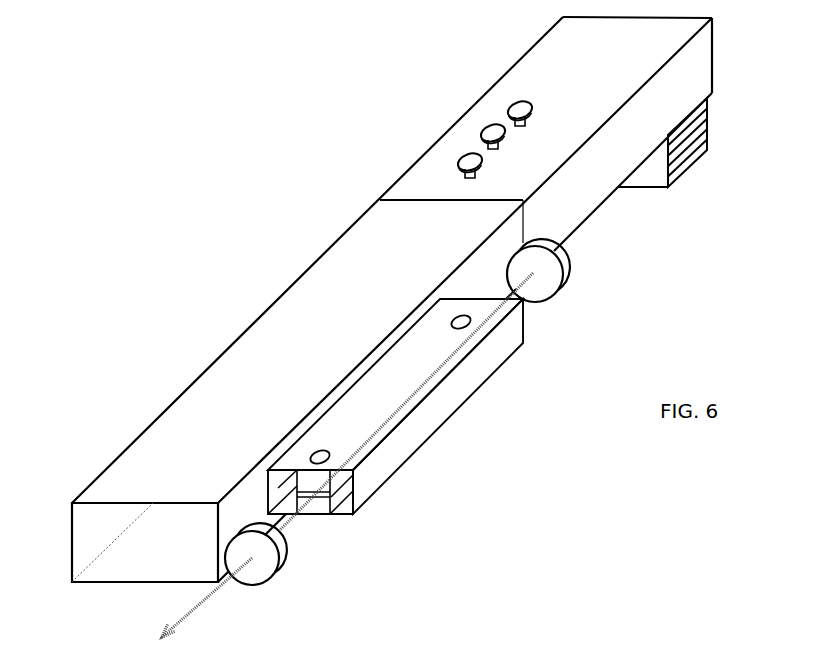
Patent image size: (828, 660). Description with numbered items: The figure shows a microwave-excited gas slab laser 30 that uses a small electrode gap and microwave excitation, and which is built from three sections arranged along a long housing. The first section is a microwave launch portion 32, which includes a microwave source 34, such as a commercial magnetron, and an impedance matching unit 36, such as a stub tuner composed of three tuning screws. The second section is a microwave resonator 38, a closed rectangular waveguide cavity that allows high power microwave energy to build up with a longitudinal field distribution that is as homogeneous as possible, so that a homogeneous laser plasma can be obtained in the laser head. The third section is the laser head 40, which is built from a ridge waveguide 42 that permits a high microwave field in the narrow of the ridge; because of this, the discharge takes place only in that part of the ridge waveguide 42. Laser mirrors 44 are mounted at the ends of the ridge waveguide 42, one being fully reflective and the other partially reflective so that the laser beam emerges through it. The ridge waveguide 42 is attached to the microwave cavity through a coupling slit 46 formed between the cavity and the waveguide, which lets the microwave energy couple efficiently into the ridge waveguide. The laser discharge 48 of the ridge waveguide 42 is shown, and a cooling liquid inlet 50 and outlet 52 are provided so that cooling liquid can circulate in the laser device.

The laser 30 is at (237, 177).
The microwave launch portion 32 is at (731, 75).
The microwave source 34 is at (682, 183).
The impedance matching unit 36 is at (479, 130).
The microwave resonator 38 is at (214, 403).
The laser head 40 is at (492, 410).
The ridge waveguide 42 is at (390, 449).
The laser mirrors 44 is at (551, 271).
The coupling slit 46 is at (273, 475).
The laser discharge 48 is at (338, 492).
The cooling liquid inlet 50 is at (466, 309).
The cooling liquid outlet 52 is at (322, 444).